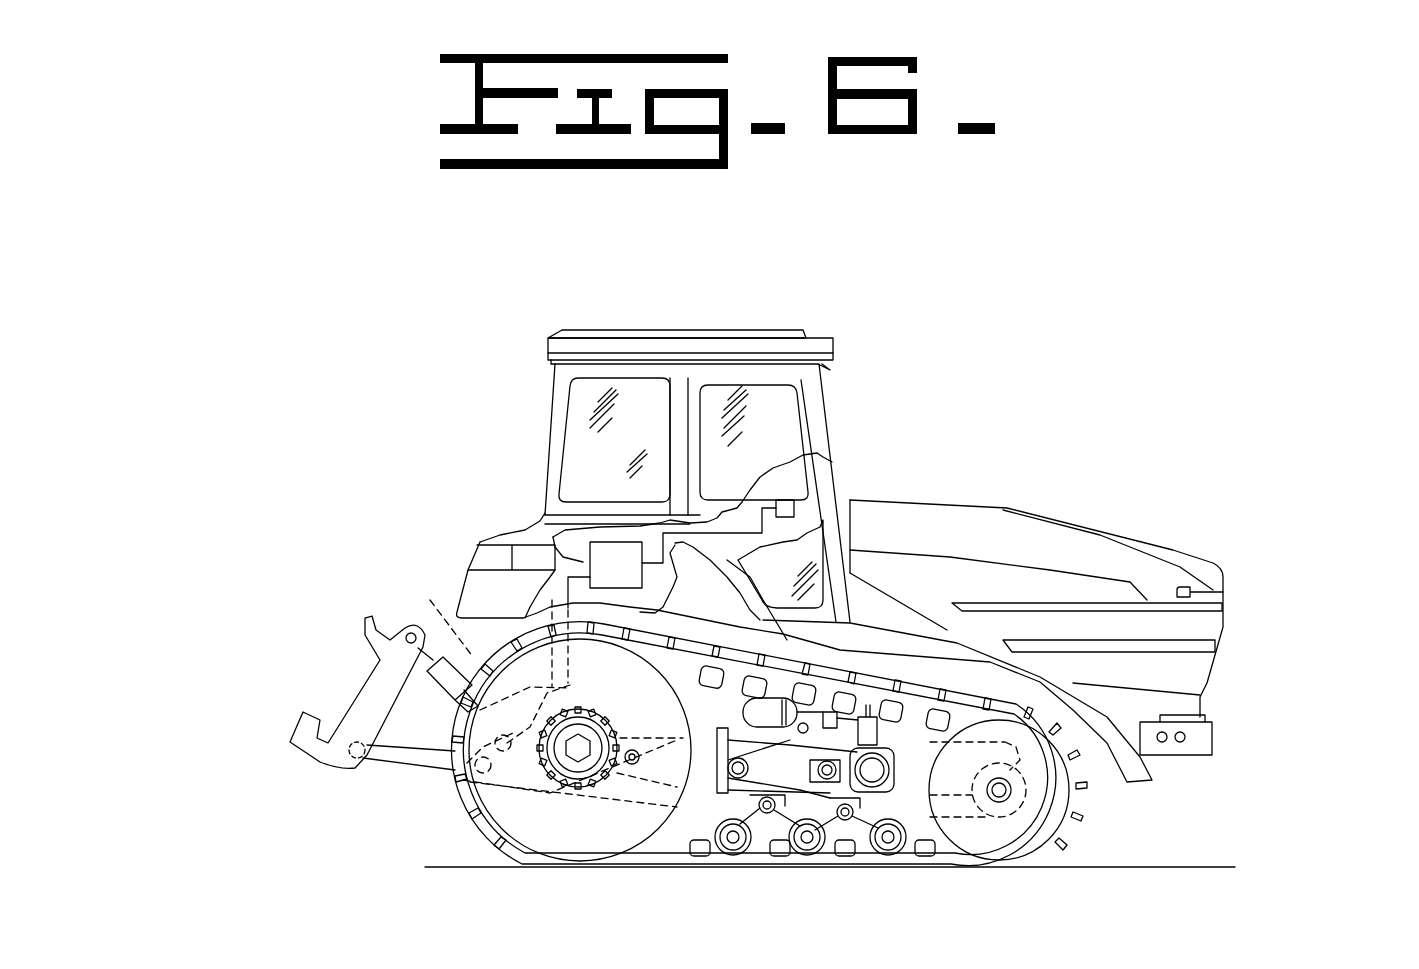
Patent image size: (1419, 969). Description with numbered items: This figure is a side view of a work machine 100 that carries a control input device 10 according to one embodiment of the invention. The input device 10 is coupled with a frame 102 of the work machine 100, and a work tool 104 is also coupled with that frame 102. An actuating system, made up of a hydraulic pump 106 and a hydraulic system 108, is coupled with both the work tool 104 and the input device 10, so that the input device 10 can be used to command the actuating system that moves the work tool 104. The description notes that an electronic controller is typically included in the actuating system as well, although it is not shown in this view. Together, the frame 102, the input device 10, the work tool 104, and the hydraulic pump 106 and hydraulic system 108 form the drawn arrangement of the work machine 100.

The work machine 100 is at (1250, 407).
The control input device 10 is at (794, 508).
The hydraulic pump 106 is at (590, 562).
The frame 102 is at (485, 667).
The work tool 104 is at (300, 612).
The hydraulic system 108 is at (440, 692).